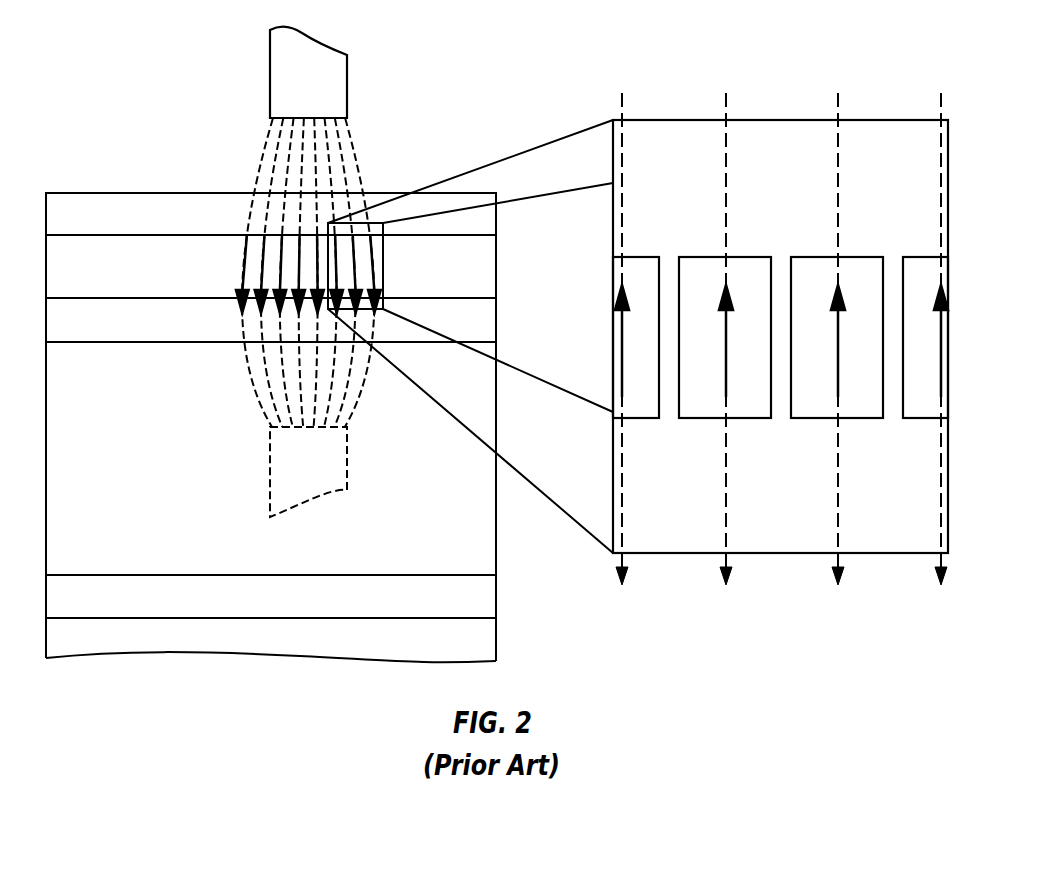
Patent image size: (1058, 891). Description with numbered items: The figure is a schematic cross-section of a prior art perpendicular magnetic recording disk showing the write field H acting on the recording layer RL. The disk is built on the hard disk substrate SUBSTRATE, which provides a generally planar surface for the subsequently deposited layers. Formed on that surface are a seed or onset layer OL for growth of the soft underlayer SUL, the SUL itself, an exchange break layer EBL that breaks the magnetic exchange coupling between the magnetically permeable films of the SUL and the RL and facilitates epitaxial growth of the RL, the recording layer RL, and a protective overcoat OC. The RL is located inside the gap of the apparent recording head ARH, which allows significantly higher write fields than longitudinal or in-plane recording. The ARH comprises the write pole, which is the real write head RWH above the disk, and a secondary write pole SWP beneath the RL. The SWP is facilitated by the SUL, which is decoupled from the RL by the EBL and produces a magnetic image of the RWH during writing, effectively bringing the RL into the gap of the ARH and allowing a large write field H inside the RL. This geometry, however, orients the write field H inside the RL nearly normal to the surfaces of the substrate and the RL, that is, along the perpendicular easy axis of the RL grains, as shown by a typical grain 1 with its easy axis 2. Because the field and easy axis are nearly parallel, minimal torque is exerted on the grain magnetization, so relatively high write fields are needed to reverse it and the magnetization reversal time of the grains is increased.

The typical grain 1 is at (818, 264).
The easy axis 2 is at (835, 382).
The write field H is at (837, 605).
The real write head RWH is at (308, 72).
The secondary write pole SWP is at (308, 472).
The apparent recording head ARH is at (260, 461).
The protective overcoat OC is at (271, 214).
The recording layer RL is at (271, 266).
The exchange break layer EBL is at (271, 320).
The soft underlayer SUL is at (271, 458).
The onset layer OL is at (271, 596).
The hard disk substrate SUBSTRATE is at (271, 637).